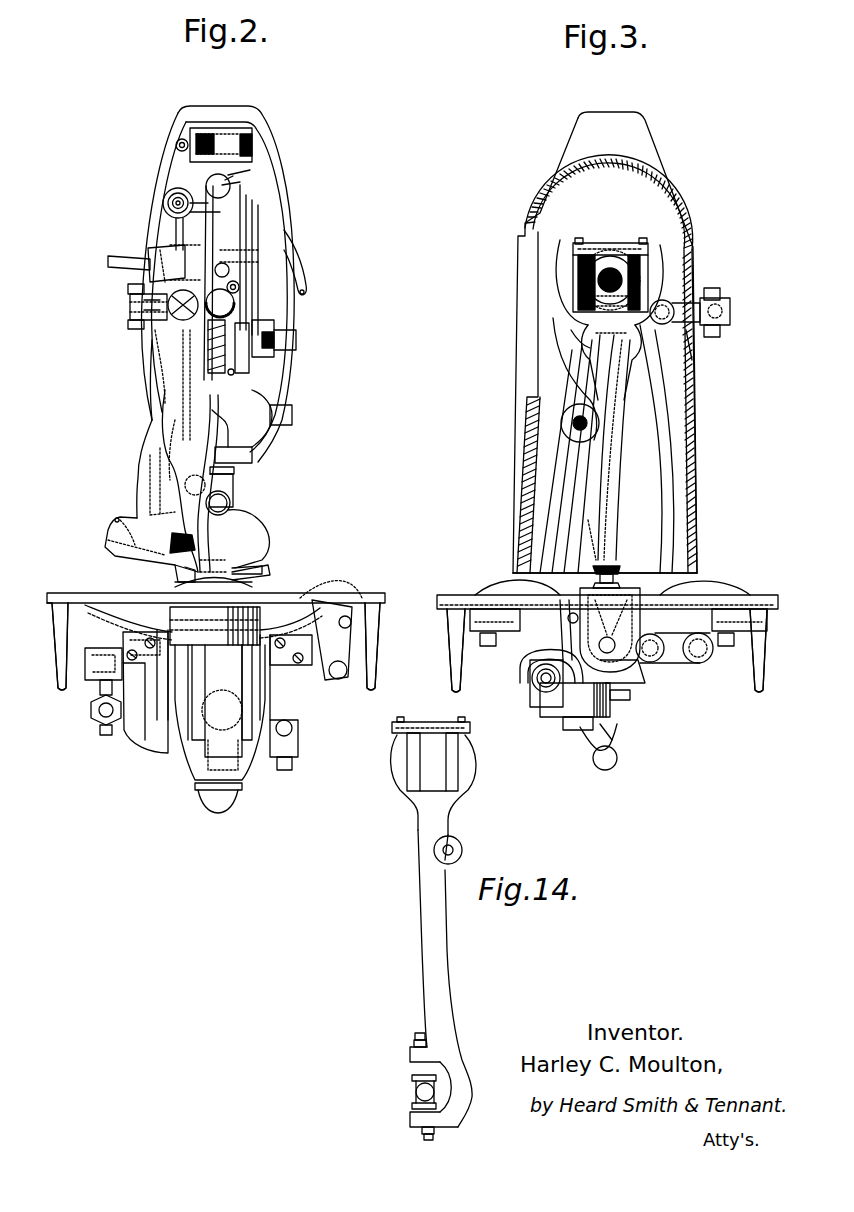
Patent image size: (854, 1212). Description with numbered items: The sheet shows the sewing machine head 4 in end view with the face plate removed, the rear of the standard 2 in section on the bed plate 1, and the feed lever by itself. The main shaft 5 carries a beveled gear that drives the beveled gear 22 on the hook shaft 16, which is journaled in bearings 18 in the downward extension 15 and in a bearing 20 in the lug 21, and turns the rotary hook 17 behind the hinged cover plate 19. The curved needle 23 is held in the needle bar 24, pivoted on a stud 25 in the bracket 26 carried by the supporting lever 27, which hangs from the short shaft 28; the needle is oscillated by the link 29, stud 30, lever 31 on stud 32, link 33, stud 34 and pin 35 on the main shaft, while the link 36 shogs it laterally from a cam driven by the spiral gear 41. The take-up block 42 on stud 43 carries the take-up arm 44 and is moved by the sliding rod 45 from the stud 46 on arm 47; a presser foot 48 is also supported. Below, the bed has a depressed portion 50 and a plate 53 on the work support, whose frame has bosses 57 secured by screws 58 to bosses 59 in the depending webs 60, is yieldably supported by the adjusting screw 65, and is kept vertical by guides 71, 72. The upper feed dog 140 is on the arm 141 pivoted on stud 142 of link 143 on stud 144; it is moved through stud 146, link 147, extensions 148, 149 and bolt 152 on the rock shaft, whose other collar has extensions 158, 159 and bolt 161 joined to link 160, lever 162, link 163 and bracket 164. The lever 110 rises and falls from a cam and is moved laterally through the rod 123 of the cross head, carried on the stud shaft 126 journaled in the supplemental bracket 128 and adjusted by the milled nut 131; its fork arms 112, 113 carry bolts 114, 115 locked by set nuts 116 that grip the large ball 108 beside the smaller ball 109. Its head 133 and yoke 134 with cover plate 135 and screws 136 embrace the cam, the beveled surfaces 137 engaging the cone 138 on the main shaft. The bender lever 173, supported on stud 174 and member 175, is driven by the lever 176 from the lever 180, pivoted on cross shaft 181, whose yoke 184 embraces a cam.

In FIG. 2, the bed plate 1 is at (356, 592).
In FIG. 3, the bed plate 1 is at (510, 592).
In FIG. 3, the standard 2 is at (686, 474).
In FIG. 2, the head 4 is at (292, 332).
In FIG. 3, the head 4 is at (655, 152).
In FIG. 3, the main shaft 5 is at (634, 282).
In FIG. 2, the downward extension 15 is at (142, 444).
In FIG. 2, the hook shaft 16 is at (158, 426).
In FIG. 2, the rotary hook 17 is at (138, 520).
In FIG. 2, the bearings 18 is at (140, 478).
In FIG. 2, the cover plate 19 is at (106, 538).
In FIG. 2, the bearing 20 is at (153, 378).
In FIG. 2, the lug or bracket 21 is at (165, 353).
In FIG. 2, the beveled gear 22 is at (245, 316).
In FIG. 2, the curved needle 23 is at (258, 566).
In FIG. 2, the needle bar 24 is at (244, 532).
In FIG. 2, the stud 25 is at (231, 503).
In FIG. 2, the bracket 26 is at (228, 492).
In FIG. 2, the supporting lever 27 is at (223, 437).
In FIG. 2, the short shaft 28 is at (194, 140).
In FIG. 2, the link 29 is at (185, 390).
In FIG. 2, the stud 30 is at (234, 476).
In FIG. 2, the lever 31 is at (188, 193).
In FIG. 2, the stud 32 is at (248, 212).
In FIG. 2, the link 33 is at (245, 231).
In FIG. 2, the stud 34 is at (242, 198).
In FIG. 2, the pin or stud 35 is at (242, 256).
In FIG. 2, the link 36 is at (240, 357).
In FIG. 2, the spiral gear 41 is at (228, 360).
In FIG. 2, the block 42 is at (152, 268).
In FIG. 2, the stud 43 is at (150, 258).
In FIG. 2, the take-up arm 44 is at (300, 278).
In FIG. 2, the sliding rod 45 is at (108, 256).
In FIG. 2, the stud 46 is at (239, 289).
In FIG. 2, the arm 47 is at (229, 272).
In FIG. 2, the presser foot 48 is at (252, 575).
In FIG. 2, the depressed portion 50 is at (282, 592).
In FIG. 2, the plate 53 is at (178, 576).
In FIG. 3, the bosses 57 is at (480, 614).
In FIG. 3, the screws 58 is at (488, 646).
In FIG. 3, the bosses 59 is at (462, 626).
In FIG. 2, the flanges or webs 60 is at (59, 667).
In FIG. 3, the flanges or webs 60 is at (462, 680).
In FIG. 2, the adjusting screw 65 is at (197, 792).
In FIG. 2, the guides 71 is at (172, 722).
In FIG. 2, the complementary guides 72 is at (160, 710).
In FIG. 14, the large ball 108 is at (412, 1078).
In FIG. 14, the smaller ball 109 is at (414, 1094).
In FIG. 3, the lever 110 is at (630, 540).
In FIG. 14, the lever 110 is at (432, 925).
In FIG. 3, the arm 112 is at (596, 540).
In FIG. 14, the arm 112 is at (410, 1060).
In FIG. 3, the arm 113 is at (634, 665).
In FIG. 14, the arm 113 is at (414, 1119).
In FIG. 14, the bolt 114 is at (418, 1034).
In FIG. 14, the bolt 115 is at (434, 1140).
In FIG. 14, the set nuts 116 is at (414, 1044).
In FIG. 3, the rod 123 is at (634, 693).
In FIG. 3, the stud shaft 126 is at (592, 652).
In FIG. 3, the supplemental bracket 128 is at (580, 630).
In FIG. 3, the milled nut 131 is at (622, 570).
In FIG. 3, the head 133 is at (594, 320).
In FIG. 14, the head 133 is at (432, 791).
In FIG. 3, the forked portion or yoke 134 is at (660, 283).
In FIG. 14, the forked portion or yoke 134 is at (472, 781).
In FIG. 3, the cover plate 135 is at (612, 243).
In FIG. 14, the cover plate 135 is at (432, 722).
In FIG. 3, the screws 136 is at (580, 240).
In FIG. 14, the screws 136 is at (400, 717).
In FIG. 3, the beveled surfaces 137 is at (577, 266).
In FIG. 14, the beveled surfaces 137 is at (410, 760).
In FIG. 3, the cone 138 is at (583, 302).
In FIG. 2, the upper feed dog 140 is at (222, 562).
In FIG. 2, the arm or lever 141 is at (206, 530).
In FIG. 2, the stud 142 is at (216, 180).
In FIG. 2, the link 143 is at (232, 176).
In FIG. 2, the stud 144 is at (236, 183).
In FIG. 2, the stud or screw 146 is at (170, 322).
In FIG. 2, the link 147 is at (130, 307).
In FIG. 2, the extension 148 is at (128, 292).
In FIG. 2, the extension 149 is at (128, 324).
In FIG. 2, the bolt 152 is at (132, 328).
In FIG. 3, the extension 158 is at (722, 302).
In FIG. 3, the extension 159 is at (730, 320).
In FIG. 3, the link 160 is at (729, 312).
In FIG. 3, the bolt 161 is at (716, 337).
In FIG. 3, the lever 162 is at (656, 360).
In FIG. 3, the link 163 is at (670, 660).
In FIG. 3, the bracket 164 is at (706, 634).
In FIG. 2, the lever 173 is at (133, 708).
In FIG. 2, the stud 174 is at (299, 740).
In FIG. 2, the member 175 is at (91, 718).
In FIG. 3, the lever 176 is at (610, 732).
In FIG. 3, the lever 180 is at (560, 478).
In FIG. 3, the cross shaft 181 is at (572, 425).
In FIG. 3, the yoke 184 is at (562, 322).